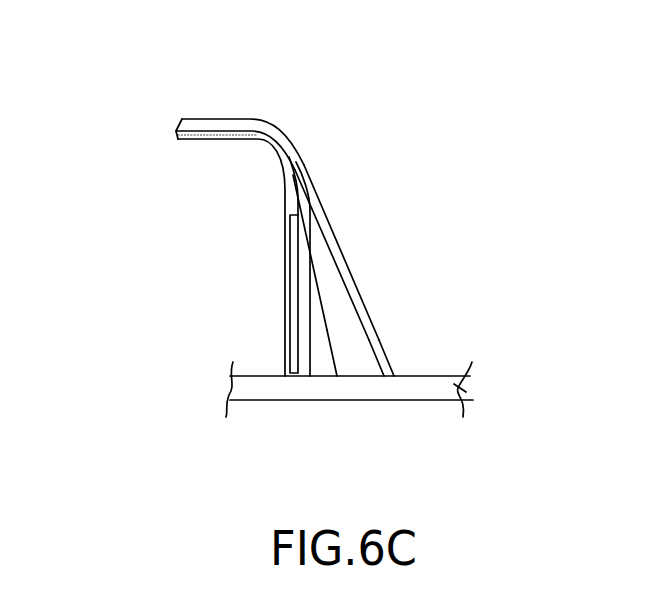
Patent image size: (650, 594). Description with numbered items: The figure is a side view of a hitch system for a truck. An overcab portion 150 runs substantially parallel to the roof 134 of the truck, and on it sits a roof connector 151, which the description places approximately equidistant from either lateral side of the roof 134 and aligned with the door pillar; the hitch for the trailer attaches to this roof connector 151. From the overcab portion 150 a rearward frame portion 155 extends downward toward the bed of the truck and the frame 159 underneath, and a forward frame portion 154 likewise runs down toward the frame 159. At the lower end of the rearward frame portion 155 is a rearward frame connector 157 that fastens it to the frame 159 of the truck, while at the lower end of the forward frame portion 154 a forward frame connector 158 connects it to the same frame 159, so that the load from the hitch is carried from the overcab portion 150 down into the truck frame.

The overcab portion 150 is at (238, 119).
The roof connector 151 is at (177, 138).
The roof 134 is at (209, 140).
The rearward frame portion 155 is at (352, 280).
The forward frame portion 154 is at (331, 335).
The rearward frame connector 157 is at (385, 377).
The forward frame connector 158 is at (342, 364).
The frame 159 is at (470, 381).